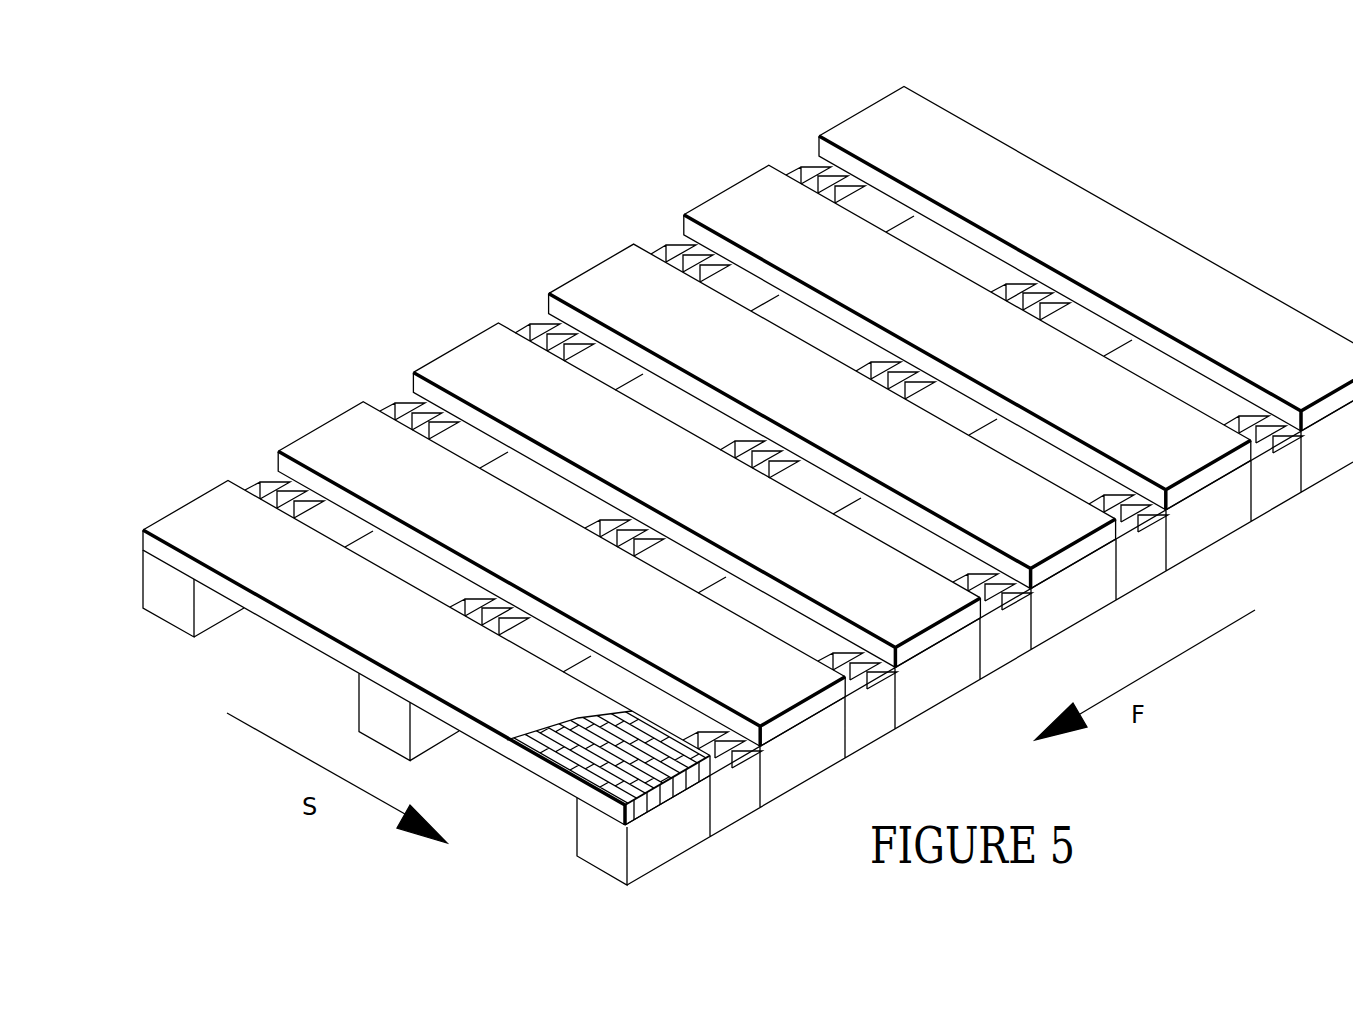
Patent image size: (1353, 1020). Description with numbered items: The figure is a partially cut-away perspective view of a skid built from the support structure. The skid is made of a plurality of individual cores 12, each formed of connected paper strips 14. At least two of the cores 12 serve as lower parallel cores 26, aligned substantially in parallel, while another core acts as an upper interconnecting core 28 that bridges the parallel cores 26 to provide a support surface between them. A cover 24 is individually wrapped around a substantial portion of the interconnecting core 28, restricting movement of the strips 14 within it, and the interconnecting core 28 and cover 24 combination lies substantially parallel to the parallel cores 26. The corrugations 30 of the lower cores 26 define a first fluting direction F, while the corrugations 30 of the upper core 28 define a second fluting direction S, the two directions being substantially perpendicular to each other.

The core 12 is at (748, 463).
The connected strips 14 is at (548, 346).
The cover 24 is at (512, 712).
The parallel cores 26 is at (183, 605).
The interconnecting core 28 is at (546, 775).
The corrugations 30 is at (648, 812).